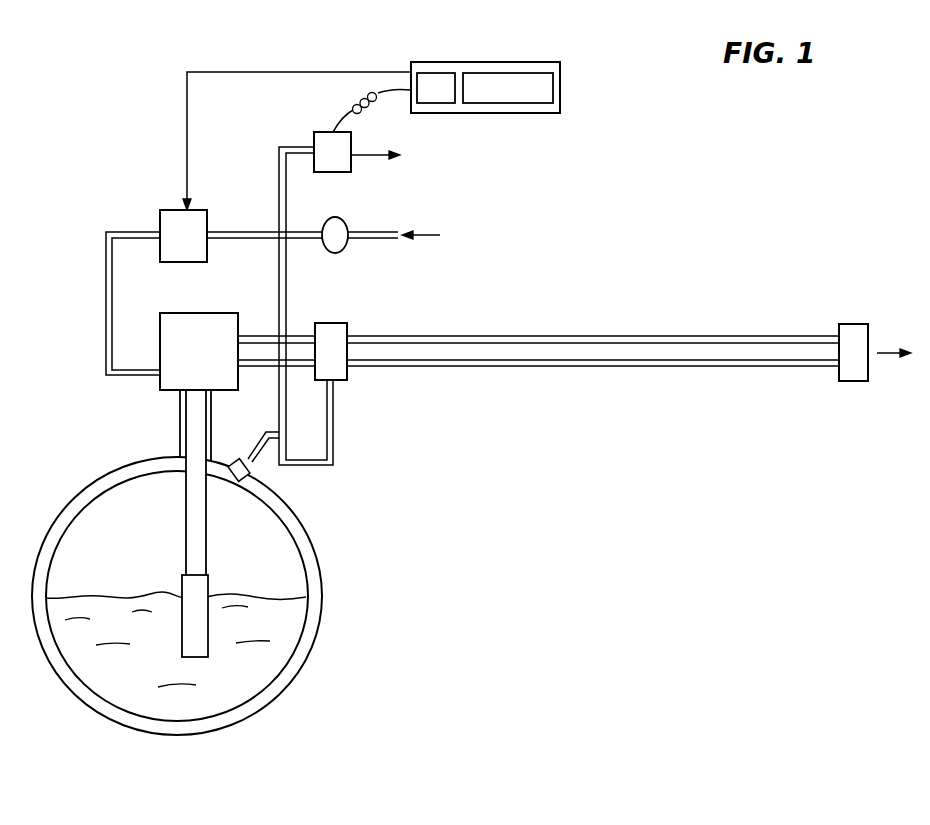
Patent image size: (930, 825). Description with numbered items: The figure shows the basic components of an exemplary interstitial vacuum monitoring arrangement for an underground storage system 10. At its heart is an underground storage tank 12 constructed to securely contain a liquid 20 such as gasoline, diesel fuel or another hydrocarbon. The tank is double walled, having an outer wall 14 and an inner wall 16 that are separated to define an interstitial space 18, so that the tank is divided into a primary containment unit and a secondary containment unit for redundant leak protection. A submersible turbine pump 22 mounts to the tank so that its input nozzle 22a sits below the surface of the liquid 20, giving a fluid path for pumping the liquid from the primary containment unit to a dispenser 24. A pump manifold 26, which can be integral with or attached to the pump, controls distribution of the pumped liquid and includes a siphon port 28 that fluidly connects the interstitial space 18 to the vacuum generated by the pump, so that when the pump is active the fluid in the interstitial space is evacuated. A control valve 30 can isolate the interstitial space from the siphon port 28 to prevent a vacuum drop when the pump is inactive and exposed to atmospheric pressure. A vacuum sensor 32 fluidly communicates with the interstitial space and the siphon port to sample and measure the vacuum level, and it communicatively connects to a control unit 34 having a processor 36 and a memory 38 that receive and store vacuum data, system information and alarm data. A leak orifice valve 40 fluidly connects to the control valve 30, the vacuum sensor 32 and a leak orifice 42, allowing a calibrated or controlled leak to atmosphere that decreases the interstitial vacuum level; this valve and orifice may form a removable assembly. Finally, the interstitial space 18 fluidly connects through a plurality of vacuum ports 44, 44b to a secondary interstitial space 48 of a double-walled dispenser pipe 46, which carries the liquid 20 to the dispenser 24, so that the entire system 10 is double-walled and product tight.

The underground storage system 10 is at (700, 283).
The underground storage tank 12 is at (220, 618).
The outer wall 14 is at (291, 688).
The inner wall 16 is at (241, 709).
The interstitial space 18 is at (200, 727).
The liquid 20 is at (243, 624).
The submersible turbine pump 22 is at (143, 576).
The input nozzle 22a is at (194, 662).
The dispenser 24 is at (884, 348).
The pump manifold 26 is at (190, 313).
The siphon port 28 is at (158, 369).
The control valve 30 is at (172, 210).
The vacuum sensor 32 is at (322, 132).
The control unit 34 is at (485, 92).
The processor 36 is at (438, 103).
The memory 38 is at (523, 103).
The leak orifice valve 40 is at (338, 218).
The leak orifice 42 is at (406, 231).
The vacuum port 44 is at (332, 323).
The vacuum port 44b is at (337, 383).
The dispenser pipe 46 is at (558, 347).
The secondary interstitial space 48 is at (598, 363).